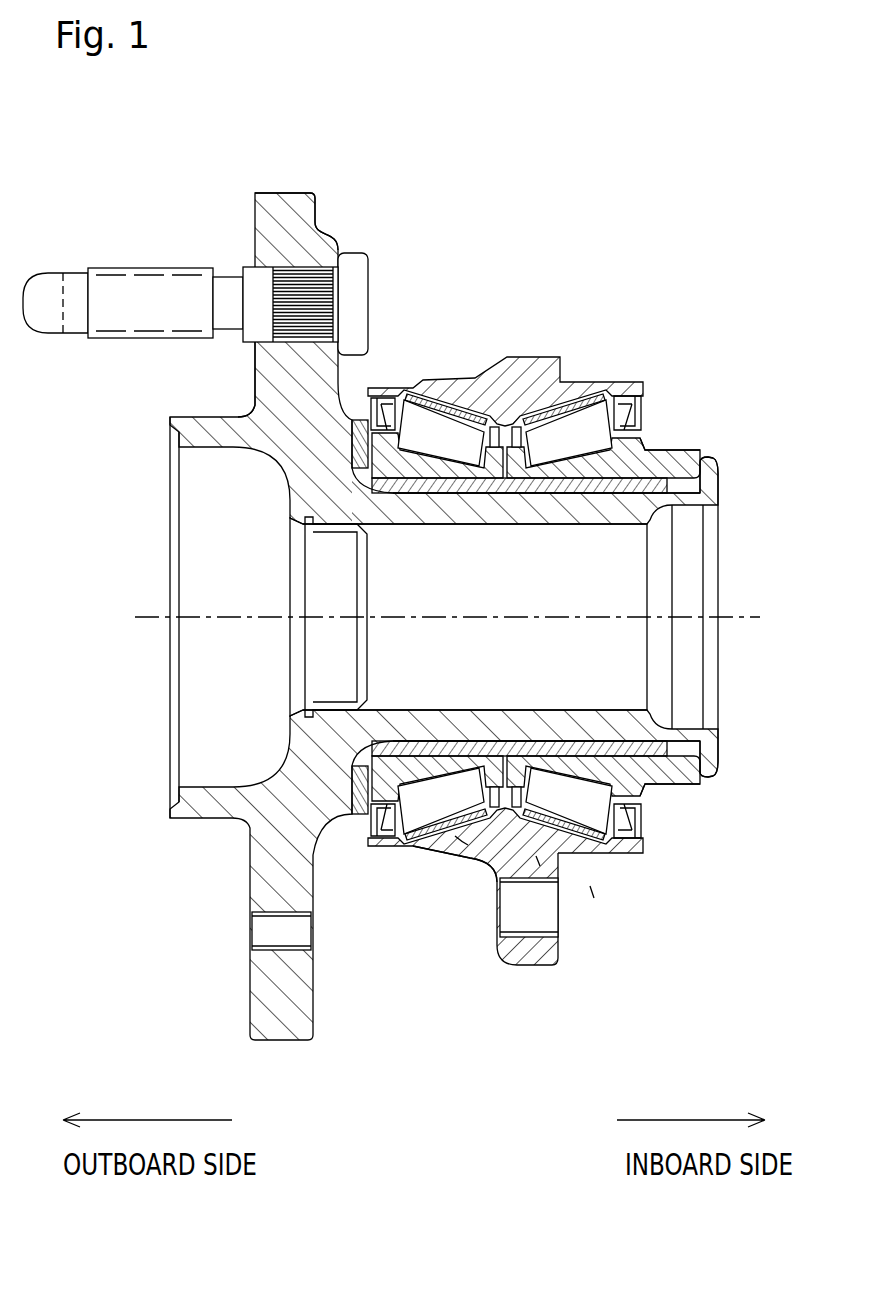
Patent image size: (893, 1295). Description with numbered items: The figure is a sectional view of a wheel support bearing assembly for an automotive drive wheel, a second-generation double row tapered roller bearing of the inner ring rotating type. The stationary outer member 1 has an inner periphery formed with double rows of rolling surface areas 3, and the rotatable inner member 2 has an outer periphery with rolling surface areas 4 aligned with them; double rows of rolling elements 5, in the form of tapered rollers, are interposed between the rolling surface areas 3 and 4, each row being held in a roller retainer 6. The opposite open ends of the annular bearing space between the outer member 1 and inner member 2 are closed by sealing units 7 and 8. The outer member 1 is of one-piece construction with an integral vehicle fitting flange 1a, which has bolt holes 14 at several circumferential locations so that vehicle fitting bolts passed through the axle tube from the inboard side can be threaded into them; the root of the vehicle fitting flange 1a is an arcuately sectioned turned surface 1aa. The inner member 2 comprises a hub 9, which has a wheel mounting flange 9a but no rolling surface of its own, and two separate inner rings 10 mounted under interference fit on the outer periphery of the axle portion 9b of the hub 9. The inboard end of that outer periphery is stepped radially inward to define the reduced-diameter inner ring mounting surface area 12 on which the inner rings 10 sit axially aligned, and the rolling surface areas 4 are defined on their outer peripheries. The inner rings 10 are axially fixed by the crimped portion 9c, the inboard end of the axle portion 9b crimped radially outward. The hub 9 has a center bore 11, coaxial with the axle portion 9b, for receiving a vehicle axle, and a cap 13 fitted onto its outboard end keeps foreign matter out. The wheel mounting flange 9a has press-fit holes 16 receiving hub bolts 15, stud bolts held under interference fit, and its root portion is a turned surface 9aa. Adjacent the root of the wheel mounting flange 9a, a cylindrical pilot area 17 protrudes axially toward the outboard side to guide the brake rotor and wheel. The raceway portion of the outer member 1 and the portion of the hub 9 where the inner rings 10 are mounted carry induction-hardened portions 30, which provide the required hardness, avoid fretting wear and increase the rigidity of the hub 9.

The outer member 1 is at (531, 348).
The vehicle fitting flange 1a is at (533, 970).
The turned surface 1aa is at (497, 867).
The inner member 2 is at (86, 514).
The rolling surface area 3 is at (447, 395).
The rolling surface area 4 is at (430, 457).
The rolling element 5 is at (434, 445).
The roller retainer 6 is at (516, 427).
The sealing unit 7 is at (362, 410).
The sealing unit 8 is at (640, 402).
The hub 9 is at (305, 497).
The wheel mounting flange 9a is at (288, 192).
The turned surface 9aa is at (257, 402).
The axle portion 9b is at (570, 512).
The crimped portion 9c is at (705, 483).
The inner ring 10 is at (432, 555).
The center bore 11 is at (580, 700).
The inner ring mounting surface area 12 is at (660, 450).
The cap 13 is at (362, 650).
The bolt hole 14 is at (500, 932).
The hub bolt 15 is at (150, 268).
The press-fit hole 16 is at (282, 285).
The cylindrical pilot area 17 is at (170, 432).
The hardened portion 30 is at (478, 745).